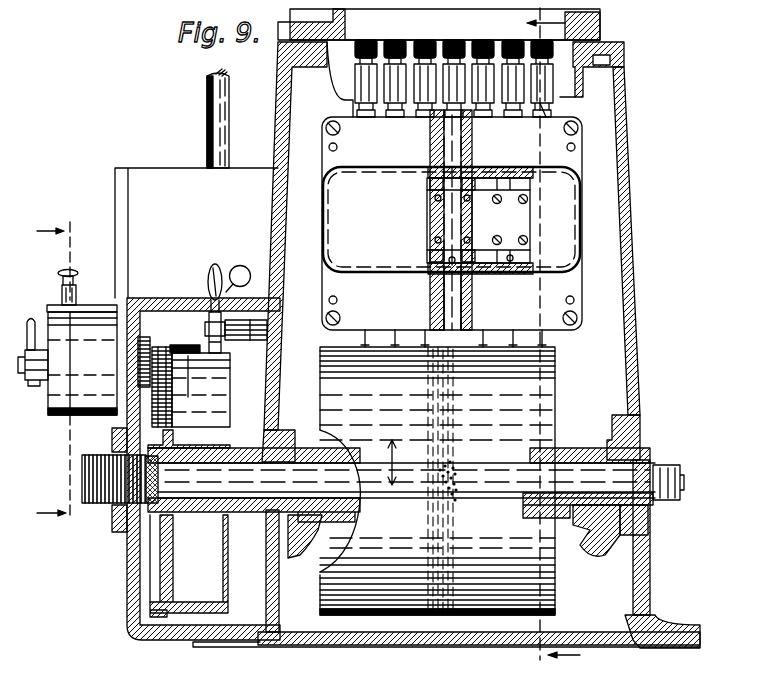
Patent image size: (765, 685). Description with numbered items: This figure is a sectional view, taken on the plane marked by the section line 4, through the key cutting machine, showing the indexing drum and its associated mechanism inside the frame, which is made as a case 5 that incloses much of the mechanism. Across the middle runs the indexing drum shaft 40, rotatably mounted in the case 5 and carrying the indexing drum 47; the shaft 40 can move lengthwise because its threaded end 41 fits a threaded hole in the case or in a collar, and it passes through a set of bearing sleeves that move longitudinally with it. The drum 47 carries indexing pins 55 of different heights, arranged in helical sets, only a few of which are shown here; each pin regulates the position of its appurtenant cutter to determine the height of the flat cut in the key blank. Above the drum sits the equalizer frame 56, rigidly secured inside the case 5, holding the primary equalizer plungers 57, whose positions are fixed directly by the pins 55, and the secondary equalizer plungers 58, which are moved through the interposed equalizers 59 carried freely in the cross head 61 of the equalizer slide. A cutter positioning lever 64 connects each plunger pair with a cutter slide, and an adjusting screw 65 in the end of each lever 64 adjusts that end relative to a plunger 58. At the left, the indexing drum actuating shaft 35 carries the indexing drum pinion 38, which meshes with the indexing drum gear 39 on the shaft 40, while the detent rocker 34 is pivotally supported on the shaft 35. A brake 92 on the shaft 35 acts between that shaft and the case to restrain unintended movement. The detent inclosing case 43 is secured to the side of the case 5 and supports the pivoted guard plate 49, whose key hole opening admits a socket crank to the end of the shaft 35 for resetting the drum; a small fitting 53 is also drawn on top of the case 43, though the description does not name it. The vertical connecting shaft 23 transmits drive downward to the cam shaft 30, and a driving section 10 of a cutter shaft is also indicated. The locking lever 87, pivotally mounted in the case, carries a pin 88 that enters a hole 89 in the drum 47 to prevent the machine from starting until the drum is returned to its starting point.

The section line 4- 4 is at (534, 344).
The case 5 is at (637, 388).
The driving section 10 is at (63, 367).
The connecting shaft 23 is at (218, 138).
The cam shaft 30 is at (241, 266).
The detent rocker 34 is at (82, 306).
The indexing drum actuating shaft 35 is at (18, 357).
The indexing drum pinion 38 is at (184, 346).
The indexing drum gear 39 is at (221, 392).
The indexing drum shaft 40 is at (233, 493).
The threaded end 41 is at (98, 500).
The detent inclosing case 43 is at (82, 393).
The indexing drum 47 is at (540, 419).
The guard plate 49 is at (31, 320).
The valve 53 is at (77, 274).
The indexing pins 55 is at (448, 474).
The equalizer frame 56 is at (584, 244).
The primary equalizer plungers 57 is at (462, 306).
The secondary equalizer plungers 58 is at (462, 143).
The equalizers 59 is at (447, 212).
The cross head 61 is at (517, 223).
The cutter positioning lever 64 is at (544, 105).
The adjusting screw 65 is at (392, 56).
The locking lever 87 is at (210, 302).
The pin 88 is at (223, 353).
The hole 89 is at (188, 394).
The brake 92 is at (125, 358).